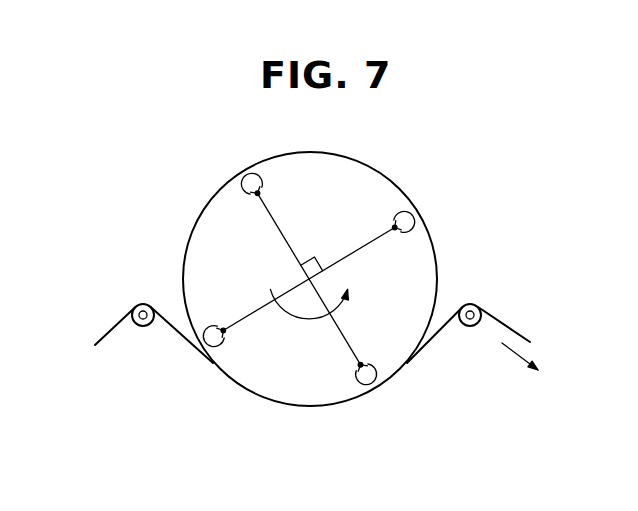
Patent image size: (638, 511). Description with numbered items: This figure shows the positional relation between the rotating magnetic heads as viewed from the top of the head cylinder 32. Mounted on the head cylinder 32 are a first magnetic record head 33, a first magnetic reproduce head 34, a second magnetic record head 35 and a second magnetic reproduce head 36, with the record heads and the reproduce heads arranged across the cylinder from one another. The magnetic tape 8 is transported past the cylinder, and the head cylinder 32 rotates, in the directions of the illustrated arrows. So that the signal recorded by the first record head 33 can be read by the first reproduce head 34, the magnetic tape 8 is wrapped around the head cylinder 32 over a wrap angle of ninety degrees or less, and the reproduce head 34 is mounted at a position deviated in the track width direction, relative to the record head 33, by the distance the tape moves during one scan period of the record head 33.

The magnetic tape 8 is at (112, 327).
The head cylinder 32 is at (184, 259).
The first magnetic record head 33 is at (370, 389).
The first magnetic reproduce head 34 is at (218, 350).
The second magnetic record head 35 is at (240, 185).
The second magnetic reproduce head 36 is at (403, 209).